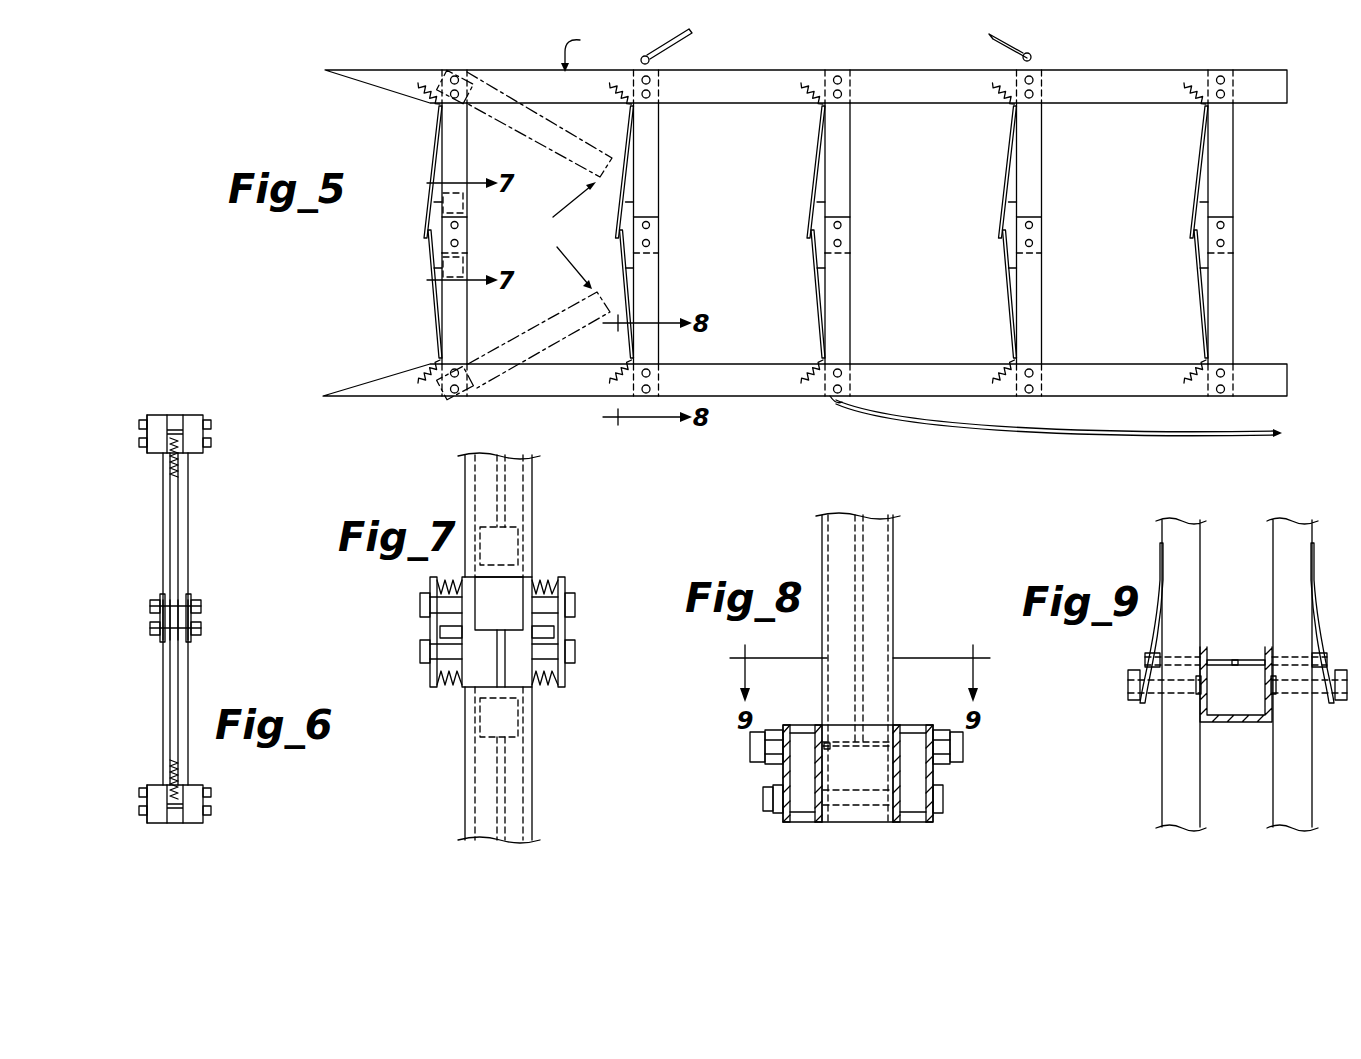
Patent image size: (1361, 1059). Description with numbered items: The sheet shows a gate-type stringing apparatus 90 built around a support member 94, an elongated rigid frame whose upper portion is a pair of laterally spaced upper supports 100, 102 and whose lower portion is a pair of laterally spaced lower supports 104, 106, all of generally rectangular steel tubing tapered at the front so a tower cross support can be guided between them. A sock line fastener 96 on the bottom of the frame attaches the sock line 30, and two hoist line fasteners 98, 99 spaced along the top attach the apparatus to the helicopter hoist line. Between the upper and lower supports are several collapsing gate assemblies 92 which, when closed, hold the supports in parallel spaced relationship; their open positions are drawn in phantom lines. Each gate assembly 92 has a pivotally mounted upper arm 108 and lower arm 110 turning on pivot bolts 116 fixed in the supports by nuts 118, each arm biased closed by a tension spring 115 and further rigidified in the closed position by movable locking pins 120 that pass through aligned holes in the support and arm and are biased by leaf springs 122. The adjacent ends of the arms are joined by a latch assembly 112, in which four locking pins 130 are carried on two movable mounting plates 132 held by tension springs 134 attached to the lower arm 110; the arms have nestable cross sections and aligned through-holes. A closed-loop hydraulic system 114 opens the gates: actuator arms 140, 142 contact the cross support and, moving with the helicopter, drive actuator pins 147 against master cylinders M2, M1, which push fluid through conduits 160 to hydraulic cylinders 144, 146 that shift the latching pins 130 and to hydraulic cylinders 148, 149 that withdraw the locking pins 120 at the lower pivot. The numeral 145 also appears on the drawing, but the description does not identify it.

In FIG. 5, the sock line 30 is at (1104, 436).
In FIG. 5, the gate-type stringing apparatus 90 is at (878, 60).
In FIG. 6, the gate-type stringing apparatus 90 is at (220, 586).
In FIG. 5, the gate assembly 92 is at (497, 227).
In FIG. 5, the support member 94 is at (581, 54).
In FIG. 5, the sock line fastener 96 is at (835, 405).
In FIG. 5, the hoist line fastener 98 is at (641, 60).
In FIG. 5, the hoist line fastener 99 is at (1031, 56).
In FIG. 5, the upper support 100 is at (380, 92).
In FIG. 6, the upper support 100 is at (190, 415).
In FIG. 6, the upper support 102 is at (157, 415).
In FIG. 5, the lower support 104 is at (372, 399).
In FIG. 6, the lower support 104 is at (204, 790).
In FIG. 8, the lower support 104 is at (933, 776).
In FIG. 9, the lower support 104 is at (1305, 790).
In FIG. 6, the lower support 106 is at (150, 788).
In FIG. 8, the lower support 106 is at (781, 776).
In FIG. 9, the lower support 106 is at (1165, 765).
In FIG. 5, the upper arm 108 is at (467, 166).
In FIG. 6, the upper arm 108 is at (189, 541).
In FIG. 7, the upper arm 108 is at (535, 506).
In FIG. 5, the lower arm 110 is at (467, 330).
In FIG. 6, the lower arm 110 is at (189, 702).
In FIG. 7, the lower arm 110 is at (535, 806).
In FIG. 8, the lower arm 110 is at (898, 630).
In FIG. 9, the lower arm 110 is at (1235, 722).
In FIG. 5, the latch assembly 112 is at (474, 240).
In FIG. 7, the latch assembly 112 is at (600, 588).
In FIG. 5, the hydraulic system 114 is at (418, 235).
In FIG. 5, the tension spring 115 is at (428, 100).
In FIG. 6, the tension spring 115 is at (180, 462).
In FIG. 5, the pivot bolt 116 is at (458, 77).
In FIG. 6, the pivot bolt 116 is at (211, 425).
In FIG. 8, the pivot bolt 116 is at (943, 800).
In FIG. 8, the nut 118 is at (768, 810).
In FIG. 5, the locking pin 120 is at (450, 91).
In FIG. 6, the locking pin 120 is at (211, 444).
In FIG. 8, the locking pin 120 is at (751, 748).
In FIG. 9, the locking pin 120 is at (1130, 694).
In FIG. 9, the leaf spring 122 is at (1322, 592).
In FIG. 6, the locking pin 130 is at (150, 606).
In FIG. 7, the locking pin 130 is at (425, 605).
In FIG. 6, the mounting plate 132 is at (160, 642).
In FIG. 7, the mounting plate 132 is at (440, 633).
In FIG. 7, the tension spring 134 is at (445, 585).
In FIG. 5, the actuator arm 140 is at (433, 179).
In FIG. 6, the actuator arm 140 is at (170, 541).
In FIG. 5, the actuator arm 142 is at (432, 258).
In FIG. 6, the actuator arm 142 is at (172, 710).
In FIG. 7, the hydraulic cylinder 144 is at (445, 640).
In FIG. 5, the connector 145 is at (430, 204).
In FIG. 7, the hydraulic cylinder 146 is at (552, 650).
In FIG. 5, the actuator pin 147 is at (433, 272).
In FIG. 9, the hydraulic cylinder 148 is at (1147, 664).
In FIG. 9, the hydraulic cylinder 149 is at (1316, 660).
In FIG. 7, the conduit 160 is at (503, 670).
In FIG. 8, the conduit 160 is at (866, 585).
In FIG. 9, the conduit 160 is at (1247, 658).
In FIG. 5, the master cylinder M1 is at (468, 267).
In FIG. 7, the master cylinder M1 is at (481, 718).
In FIG. 5, the master cylinder M2 is at (465, 204).
In FIG. 7, the master cylinder M2 is at (520, 548).